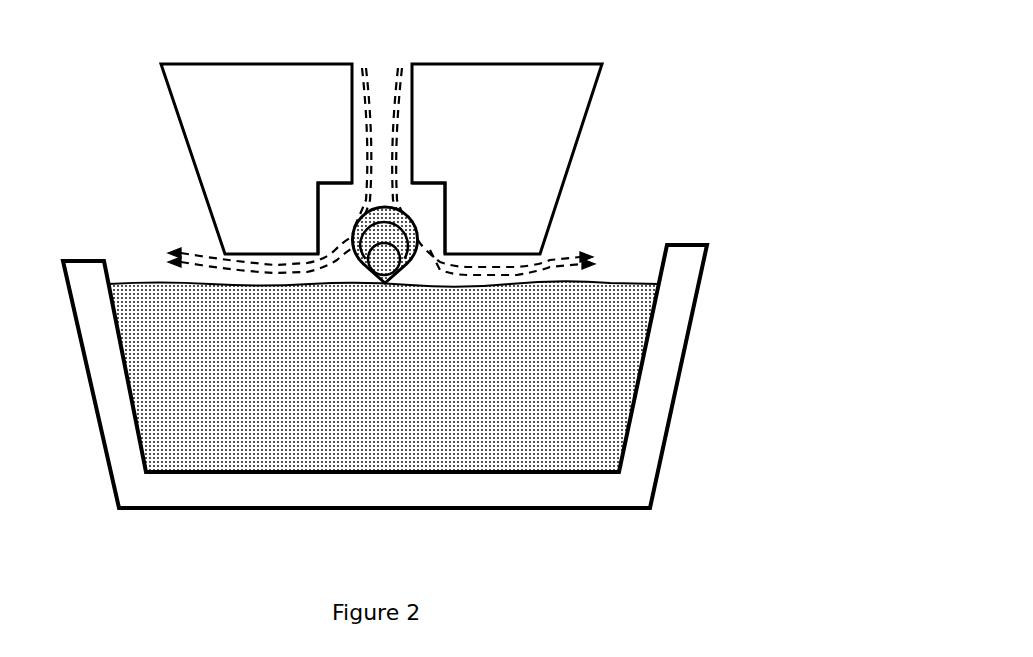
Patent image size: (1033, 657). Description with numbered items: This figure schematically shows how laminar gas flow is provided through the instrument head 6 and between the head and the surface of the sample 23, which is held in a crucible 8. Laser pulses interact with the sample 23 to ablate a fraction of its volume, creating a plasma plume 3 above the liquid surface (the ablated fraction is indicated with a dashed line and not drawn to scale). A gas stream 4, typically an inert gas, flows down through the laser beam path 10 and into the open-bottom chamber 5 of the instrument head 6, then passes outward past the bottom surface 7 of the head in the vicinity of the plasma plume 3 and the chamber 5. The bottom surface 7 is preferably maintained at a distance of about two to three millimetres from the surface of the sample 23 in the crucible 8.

The plasma plume 3 is at (361, 228).
The gas stream 4 is at (574, 244).
The open-bottom chamber 5 is at (444, 200).
The instrument head 6 is at (568, 96).
The bottom surface 7 is at (235, 265).
The crucible 8 is at (667, 418).
The laser beam path 10 is at (411, 119).
The sample 23 is at (629, 367).